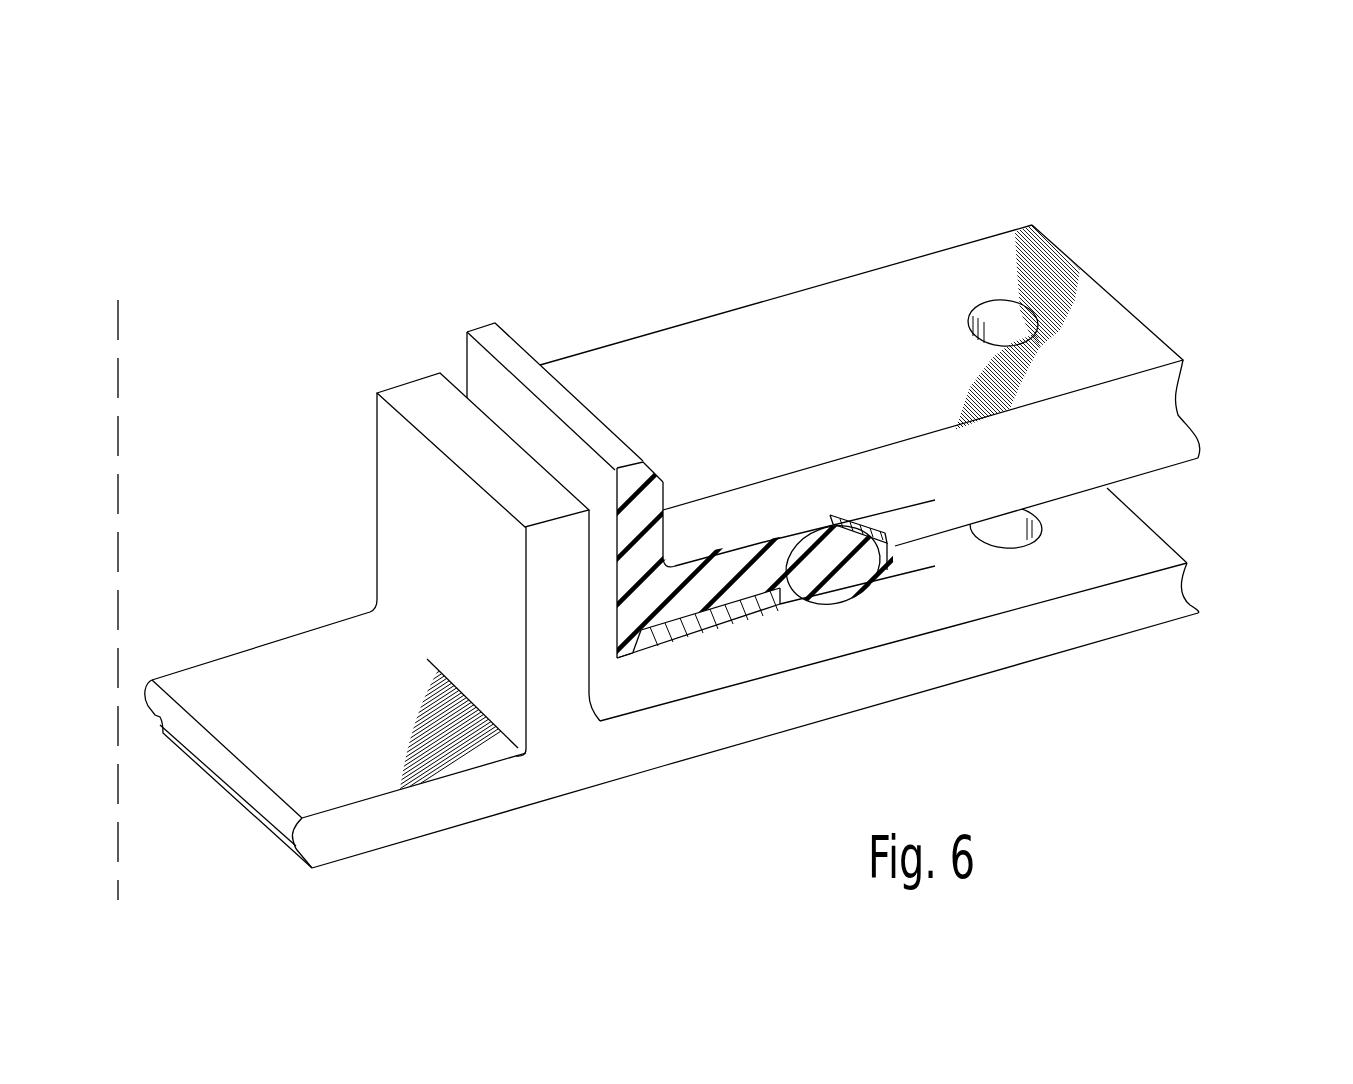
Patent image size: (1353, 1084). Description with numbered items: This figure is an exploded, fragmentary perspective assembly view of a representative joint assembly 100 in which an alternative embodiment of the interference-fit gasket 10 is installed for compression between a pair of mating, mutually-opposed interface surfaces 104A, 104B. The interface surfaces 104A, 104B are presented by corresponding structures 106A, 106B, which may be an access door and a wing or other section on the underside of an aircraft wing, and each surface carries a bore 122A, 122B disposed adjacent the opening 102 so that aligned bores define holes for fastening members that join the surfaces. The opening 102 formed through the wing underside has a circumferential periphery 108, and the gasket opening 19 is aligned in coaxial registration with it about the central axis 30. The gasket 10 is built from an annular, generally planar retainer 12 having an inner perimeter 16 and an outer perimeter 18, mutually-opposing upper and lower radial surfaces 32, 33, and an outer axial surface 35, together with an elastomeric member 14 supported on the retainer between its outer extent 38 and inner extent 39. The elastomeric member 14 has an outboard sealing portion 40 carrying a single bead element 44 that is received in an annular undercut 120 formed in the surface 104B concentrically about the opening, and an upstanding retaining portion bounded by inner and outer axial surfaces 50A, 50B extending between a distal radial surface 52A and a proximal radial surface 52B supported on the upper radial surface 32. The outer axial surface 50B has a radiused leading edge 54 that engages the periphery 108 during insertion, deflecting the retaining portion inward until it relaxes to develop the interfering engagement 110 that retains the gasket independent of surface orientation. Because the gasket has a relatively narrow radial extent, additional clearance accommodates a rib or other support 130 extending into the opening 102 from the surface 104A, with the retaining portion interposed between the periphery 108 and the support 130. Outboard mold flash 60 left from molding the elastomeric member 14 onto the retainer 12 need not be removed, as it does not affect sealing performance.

The joint assembly 100 is at (868, 153).
The interference-fit gasket 10 is at (408, 248).
The bore 122B is at (986, 297).
The structure 106B is at (1103, 283).
The central axis 30 is at (115, 338).
The distal radial surface 52A is at (507, 348).
The inner axial surface 50A is at (490, 380).
The support 130 is at (403, 395).
The leading edge 54 is at (660, 482).
The outer axial surface 50B is at (663, 505).
The interfering engagement 110 is at (667, 527).
The upper radial surface 32 is at (760, 540).
The sealing portion 40 is at (788, 553).
The bead element 44 is at (843, 513).
The elastomeric member 14 is at (860, 532).
The mold flash 60 is at (922, 504).
The outer extent 38 is at (889, 540).
The circumferential periphery 108 is at (657, 563).
The opening 102 is at (178, 520).
The opening 19 is at (276, 547).
The interface surface 104B is at (1150, 474).
The interface surface 104A is at (1150, 552).
The bore 122A is at (1036, 546).
The structure 106A is at (1198, 613).
The annular undercut 120 is at (952, 615).
The outer perimeter 18 is at (813, 607).
The outer axial surface 35 is at (793, 613).
The lower radial surface 33 is at (718, 628).
The retainer 12 is at (663, 627).
The inner extent 39 is at (621, 672).
The inner perimeter 16 is at (617, 657).
The proximal radial surface 52B is at (600, 600).